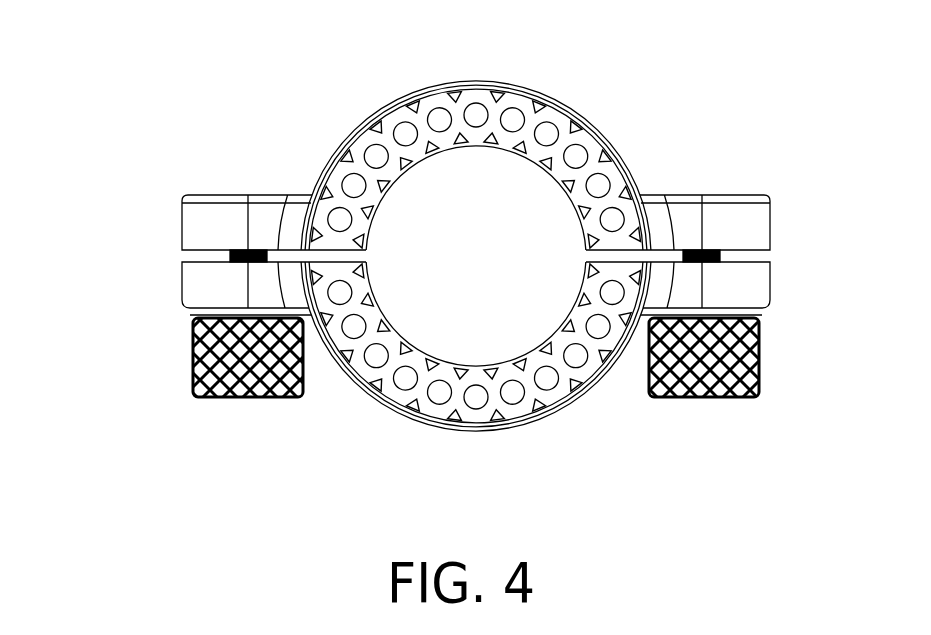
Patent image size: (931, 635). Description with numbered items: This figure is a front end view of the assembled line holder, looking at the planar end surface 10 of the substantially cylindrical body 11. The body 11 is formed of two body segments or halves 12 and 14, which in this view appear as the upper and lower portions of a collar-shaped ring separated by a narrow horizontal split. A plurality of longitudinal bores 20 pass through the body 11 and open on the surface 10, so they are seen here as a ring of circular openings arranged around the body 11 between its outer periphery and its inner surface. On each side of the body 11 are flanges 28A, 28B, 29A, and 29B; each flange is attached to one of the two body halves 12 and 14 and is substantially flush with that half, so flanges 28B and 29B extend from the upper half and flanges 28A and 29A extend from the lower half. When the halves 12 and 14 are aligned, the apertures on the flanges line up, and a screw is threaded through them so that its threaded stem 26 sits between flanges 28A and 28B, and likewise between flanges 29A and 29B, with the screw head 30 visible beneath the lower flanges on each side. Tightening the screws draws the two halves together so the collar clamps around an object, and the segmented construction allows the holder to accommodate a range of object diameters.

The surface 10 is at (428, 93).
The body 11 is at (293, 134).
The body half 12 is at (422, 422).
The body half 14 is at (548, 103).
The longitudinal bores 20 is at (376, 156).
The threaded stem 26 is at (230, 254).
The flange 28A is at (187, 288).
The flange 28B is at (192, 217).
The flange 29A is at (750, 290).
The flange 29B is at (732, 217).
The screw head 30 is at (203, 397).